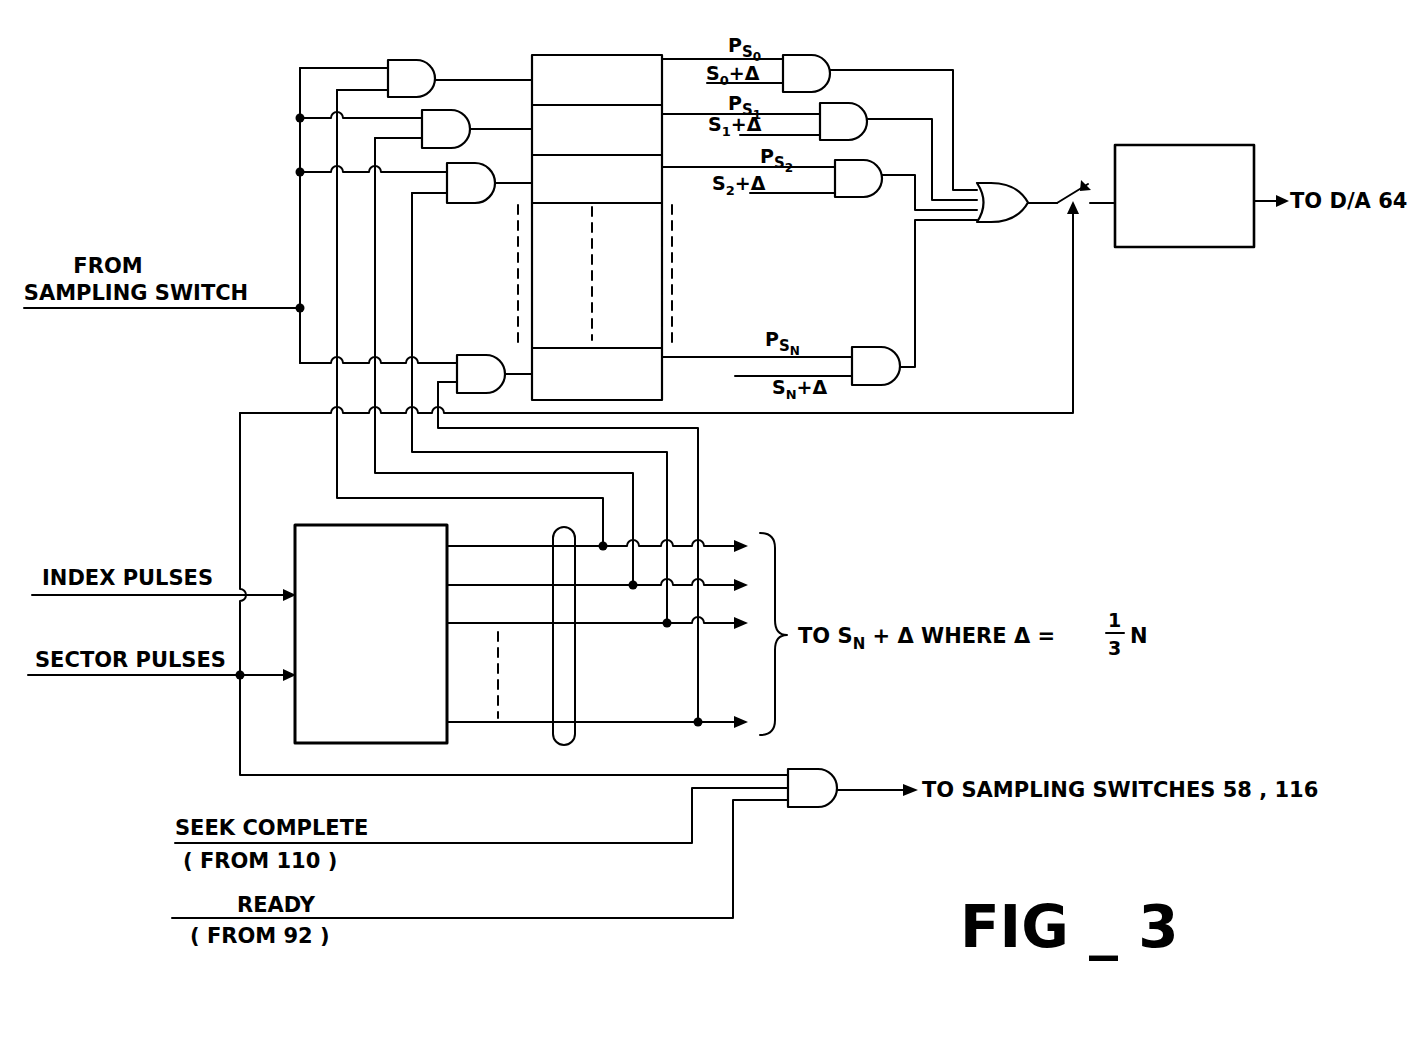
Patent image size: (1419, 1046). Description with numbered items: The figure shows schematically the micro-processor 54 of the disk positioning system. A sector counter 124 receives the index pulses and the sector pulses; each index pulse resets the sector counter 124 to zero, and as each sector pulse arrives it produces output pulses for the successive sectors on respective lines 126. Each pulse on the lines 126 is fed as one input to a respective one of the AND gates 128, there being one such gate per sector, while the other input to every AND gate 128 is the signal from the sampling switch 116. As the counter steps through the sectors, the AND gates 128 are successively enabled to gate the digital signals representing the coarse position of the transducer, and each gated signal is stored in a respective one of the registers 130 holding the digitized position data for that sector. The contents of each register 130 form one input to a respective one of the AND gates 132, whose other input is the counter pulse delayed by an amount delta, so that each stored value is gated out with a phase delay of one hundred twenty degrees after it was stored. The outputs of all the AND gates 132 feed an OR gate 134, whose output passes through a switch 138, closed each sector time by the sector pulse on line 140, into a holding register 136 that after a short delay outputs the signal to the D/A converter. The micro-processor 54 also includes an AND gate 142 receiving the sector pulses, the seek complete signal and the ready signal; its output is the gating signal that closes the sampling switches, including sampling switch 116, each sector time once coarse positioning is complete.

The micro-processor 54 is at (232, 177).
The sampling switch 116 is at (164, 321).
The sector counter 124 is at (305, 522).
The lines 126 is at (575, 737).
The AND gates 128 is at (434, 67).
The registers 130 is at (635, 115).
The AND gates 132 is at (848, 103).
The OR gate 134 is at (1000, 223).
The holding register 136 is at (1208, 248).
The switch 138 is at (1065, 187).
The line 140 is at (958, 413).
The AND gate 142 is at (817, 808).